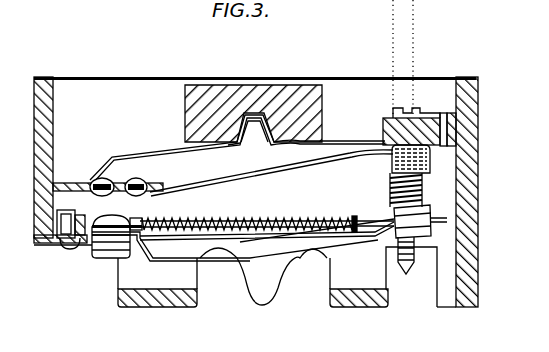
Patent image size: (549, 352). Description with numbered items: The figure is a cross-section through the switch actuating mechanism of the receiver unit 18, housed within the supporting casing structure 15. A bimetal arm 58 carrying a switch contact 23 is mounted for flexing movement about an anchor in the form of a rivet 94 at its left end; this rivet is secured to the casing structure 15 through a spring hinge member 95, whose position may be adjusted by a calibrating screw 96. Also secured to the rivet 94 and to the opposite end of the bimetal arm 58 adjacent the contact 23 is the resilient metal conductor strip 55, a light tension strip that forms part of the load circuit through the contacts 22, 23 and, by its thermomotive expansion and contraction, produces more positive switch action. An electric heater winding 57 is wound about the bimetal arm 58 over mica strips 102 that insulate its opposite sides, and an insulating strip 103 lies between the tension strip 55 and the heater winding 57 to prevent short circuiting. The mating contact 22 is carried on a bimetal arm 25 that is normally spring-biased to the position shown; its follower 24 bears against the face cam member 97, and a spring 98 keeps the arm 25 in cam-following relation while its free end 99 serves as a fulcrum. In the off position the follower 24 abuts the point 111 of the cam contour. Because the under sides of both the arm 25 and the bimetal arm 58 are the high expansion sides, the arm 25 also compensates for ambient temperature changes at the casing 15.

The supporting casing structure 15 is at (50, 77).
The receiver unit 18 is at (374, 134).
The contact 22 is at (392, 172).
The contact 23 is at (426, 212).
The follower 24 is at (252, 145).
The arm 25 is at (339, 142).
The resilient metal conductor strip 55 is at (337, 260).
The electric heater winding 57 is at (306, 217).
The bimetal arm 58 is at (372, 216).
The rivet 94 is at (110, 222).
The spring hinge member 95 is at (84, 245).
The calibrating screw 96 is at (418, 113).
The face cam member 97 is at (231, 150).
The spring 98 is at (279, 183).
The free end 99 is at (96, 171).
The mica strips 102 is at (150, 214).
The insulating strip 103 is at (200, 240).
The point of the cam contour 111 is at (292, 133).